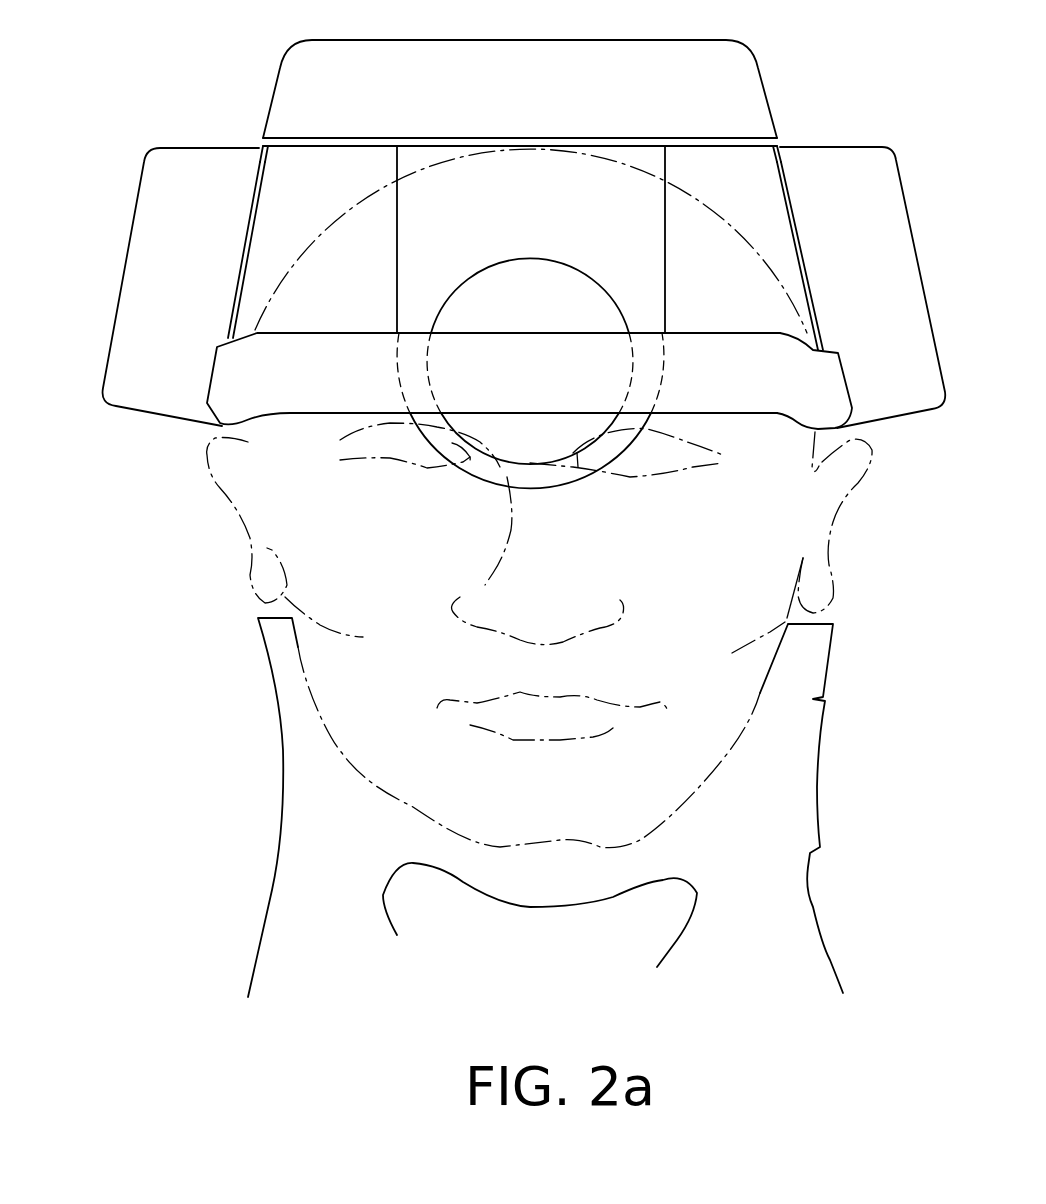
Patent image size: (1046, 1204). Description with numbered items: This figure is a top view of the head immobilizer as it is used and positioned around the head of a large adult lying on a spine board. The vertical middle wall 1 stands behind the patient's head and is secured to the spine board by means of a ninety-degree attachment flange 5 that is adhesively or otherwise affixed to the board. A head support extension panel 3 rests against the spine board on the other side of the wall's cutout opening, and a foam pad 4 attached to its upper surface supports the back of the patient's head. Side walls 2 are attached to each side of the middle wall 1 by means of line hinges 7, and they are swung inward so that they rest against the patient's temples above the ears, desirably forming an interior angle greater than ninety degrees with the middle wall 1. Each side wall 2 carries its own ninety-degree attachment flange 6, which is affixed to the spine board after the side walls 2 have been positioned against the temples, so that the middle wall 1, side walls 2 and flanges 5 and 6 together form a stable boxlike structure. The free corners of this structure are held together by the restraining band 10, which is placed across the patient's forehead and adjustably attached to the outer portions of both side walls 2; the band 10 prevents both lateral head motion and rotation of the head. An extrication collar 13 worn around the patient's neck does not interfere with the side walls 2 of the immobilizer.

The vertical middle wall 1 is at (368, 140).
The side walls 2 is at (250, 227).
The head support extension panel 3 is at (655, 220).
The foam pad 4 is at (583, 290).
The attachment flange 5 is at (543, 57).
The attachment flanges 6 is at (145, 263).
The line hinges 7 is at (262, 146).
The restraining band 10 is at (827, 397).
The extrication collar 13 is at (793, 833).